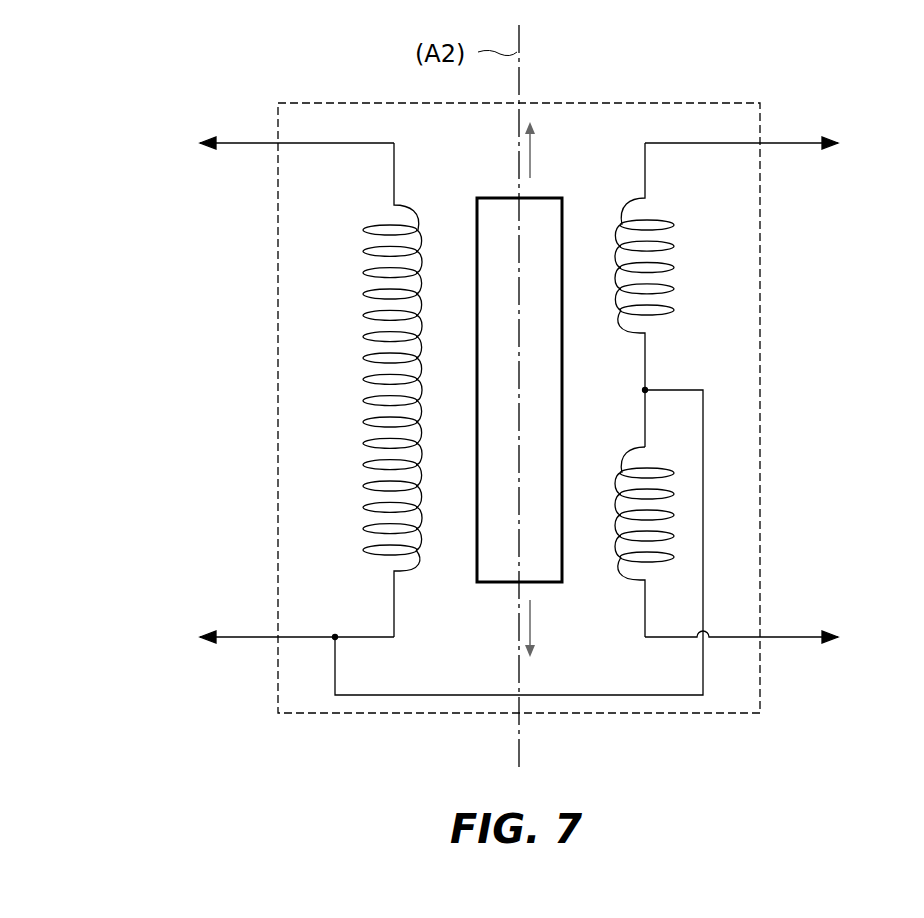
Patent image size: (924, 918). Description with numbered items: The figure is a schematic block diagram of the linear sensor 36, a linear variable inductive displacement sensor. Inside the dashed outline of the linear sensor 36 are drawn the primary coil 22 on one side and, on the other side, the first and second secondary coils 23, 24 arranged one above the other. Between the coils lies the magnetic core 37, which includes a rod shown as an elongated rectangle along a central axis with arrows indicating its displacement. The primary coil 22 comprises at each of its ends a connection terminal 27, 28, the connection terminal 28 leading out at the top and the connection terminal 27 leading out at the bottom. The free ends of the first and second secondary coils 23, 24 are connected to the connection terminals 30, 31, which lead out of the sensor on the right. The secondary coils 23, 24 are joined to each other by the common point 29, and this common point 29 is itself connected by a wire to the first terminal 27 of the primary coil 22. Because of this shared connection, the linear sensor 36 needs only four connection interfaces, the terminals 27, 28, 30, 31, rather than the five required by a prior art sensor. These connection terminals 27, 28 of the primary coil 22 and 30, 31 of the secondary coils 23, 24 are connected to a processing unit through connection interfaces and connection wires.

The primary coil 22 is at (410, 200).
The first secondary coil 23 is at (627, 197).
The second secondary coil 24 is at (627, 582).
The connection terminal 27 is at (224, 637).
The connection terminal 28 is at (224, 143).
The common point 29 is at (648, 389).
The connection terminal 30 is at (812, 143).
The connection terminal 31 is at (812, 637).
The linear sensor 36 is at (812, 66).
The magnetic core 37 is at (500, 196).